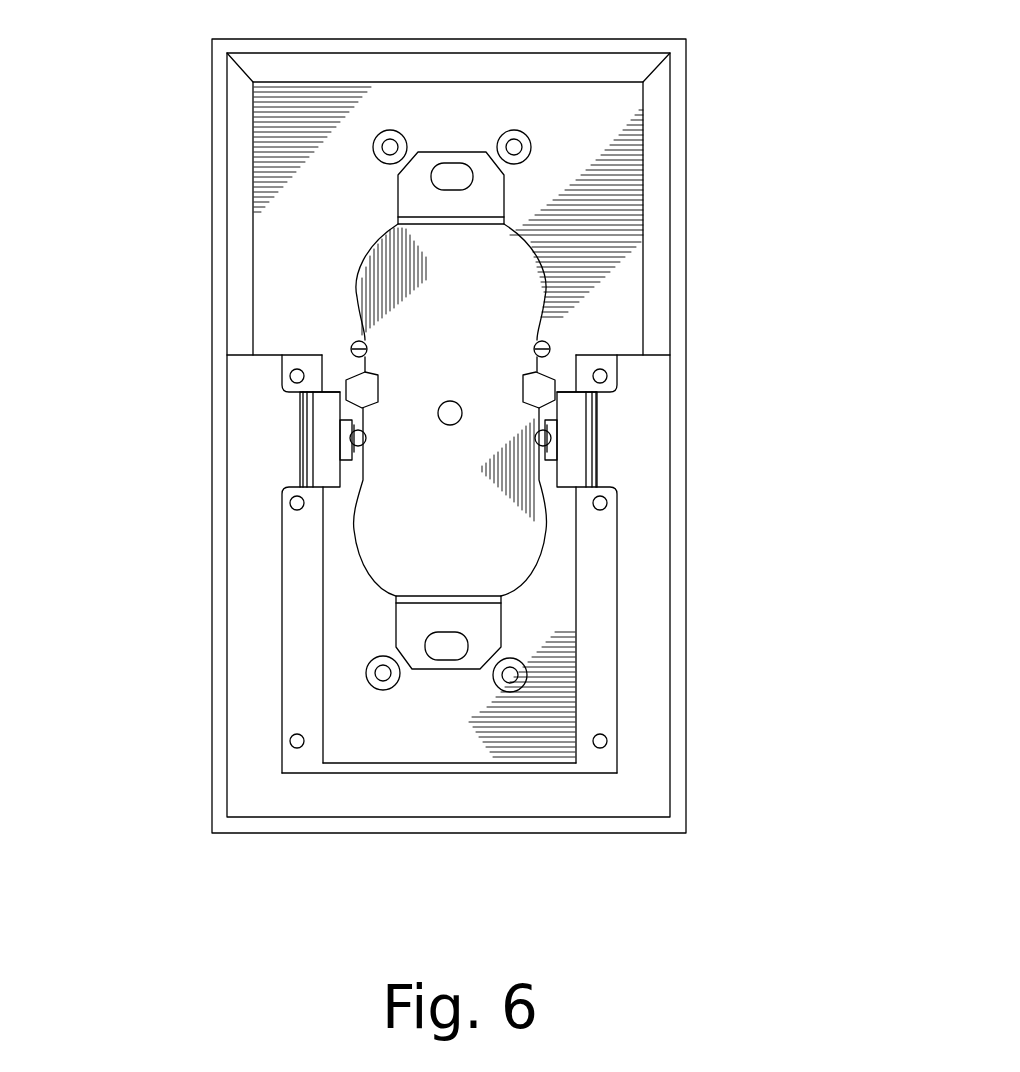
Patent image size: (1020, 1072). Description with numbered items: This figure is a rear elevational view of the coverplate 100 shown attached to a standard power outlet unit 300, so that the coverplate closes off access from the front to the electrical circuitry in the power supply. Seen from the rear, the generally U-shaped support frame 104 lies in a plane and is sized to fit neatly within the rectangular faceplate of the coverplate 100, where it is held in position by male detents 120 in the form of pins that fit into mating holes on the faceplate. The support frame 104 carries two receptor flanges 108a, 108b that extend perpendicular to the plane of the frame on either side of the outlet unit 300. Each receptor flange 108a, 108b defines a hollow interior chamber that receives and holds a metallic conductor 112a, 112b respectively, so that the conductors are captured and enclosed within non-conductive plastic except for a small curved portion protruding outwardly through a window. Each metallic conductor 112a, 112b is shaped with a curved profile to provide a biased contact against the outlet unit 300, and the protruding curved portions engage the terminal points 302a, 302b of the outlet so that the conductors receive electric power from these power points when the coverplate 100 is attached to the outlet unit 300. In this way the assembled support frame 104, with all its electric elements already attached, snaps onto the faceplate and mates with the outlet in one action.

The coverplate 100 is at (686, 90).
The support frame 104 is at (640, 624).
The receptor flange 108a is at (335, 398).
The receptor flange 108b is at (567, 450).
The metallic conductor 112a is at (348, 437).
The metallic conductor 112b is at (553, 428).
The male detents 120 is at (607, 740).
The outlet unit 300 is at (503, 260).
The terminal point 302a is at (363, 428).
The terminal point 302b is at (543, 447).